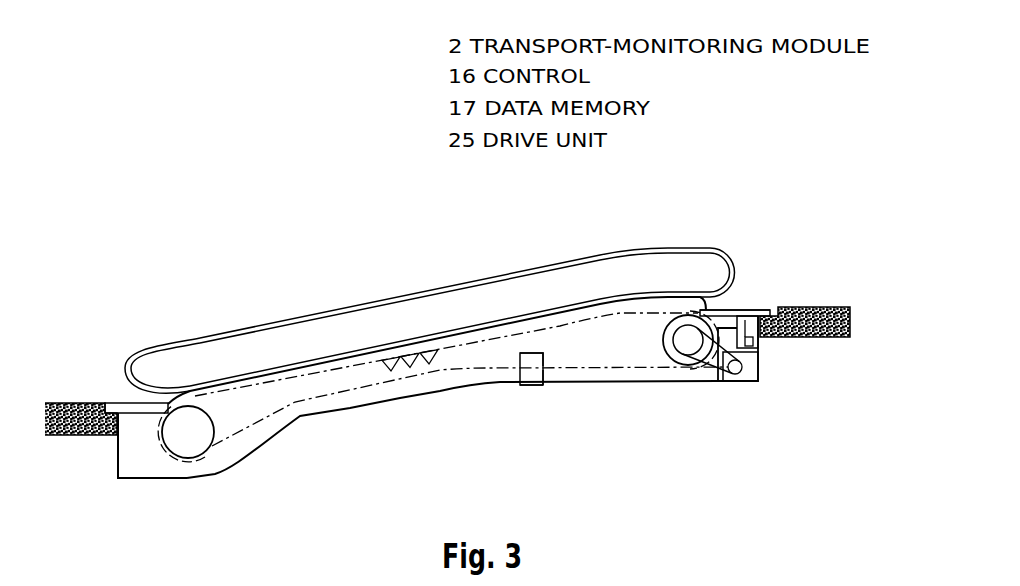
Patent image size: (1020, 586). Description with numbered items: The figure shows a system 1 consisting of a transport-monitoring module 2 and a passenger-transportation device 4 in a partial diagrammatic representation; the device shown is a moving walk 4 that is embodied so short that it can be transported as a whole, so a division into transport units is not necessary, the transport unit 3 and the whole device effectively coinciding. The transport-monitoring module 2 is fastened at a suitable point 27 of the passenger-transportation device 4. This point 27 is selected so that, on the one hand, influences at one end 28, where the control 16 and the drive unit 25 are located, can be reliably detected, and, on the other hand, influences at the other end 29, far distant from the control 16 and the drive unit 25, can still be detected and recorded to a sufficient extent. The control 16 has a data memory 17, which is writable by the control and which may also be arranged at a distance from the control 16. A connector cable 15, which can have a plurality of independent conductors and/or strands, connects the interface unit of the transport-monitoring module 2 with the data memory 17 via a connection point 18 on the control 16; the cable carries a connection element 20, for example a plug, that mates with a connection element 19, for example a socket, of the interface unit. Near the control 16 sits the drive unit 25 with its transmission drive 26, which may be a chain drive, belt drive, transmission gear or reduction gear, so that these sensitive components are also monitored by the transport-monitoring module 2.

The system 1 is at (361, 205).
The transport-monitoring module 2 is at (533, 372).
The transport unit 3 is at (285, 314).
The passenger-transportation device 4 is at (285, 314).
The connector cable 15 is at (614, 384).
The control 16 is at (748, 323).
The data memory 17 is at (755, 342).
The connection point 18 is at (731, 318).
The connection element 19 is at (545, 385).
The connection element 20 is at (545, 385).
The drive unit 25 is at (753, 366).
The transmission drive 26 is at (700, 393).
The point 27 is at (525, 346).
The end 28 is at (739, 400).
The end 29 is at (165, 470).